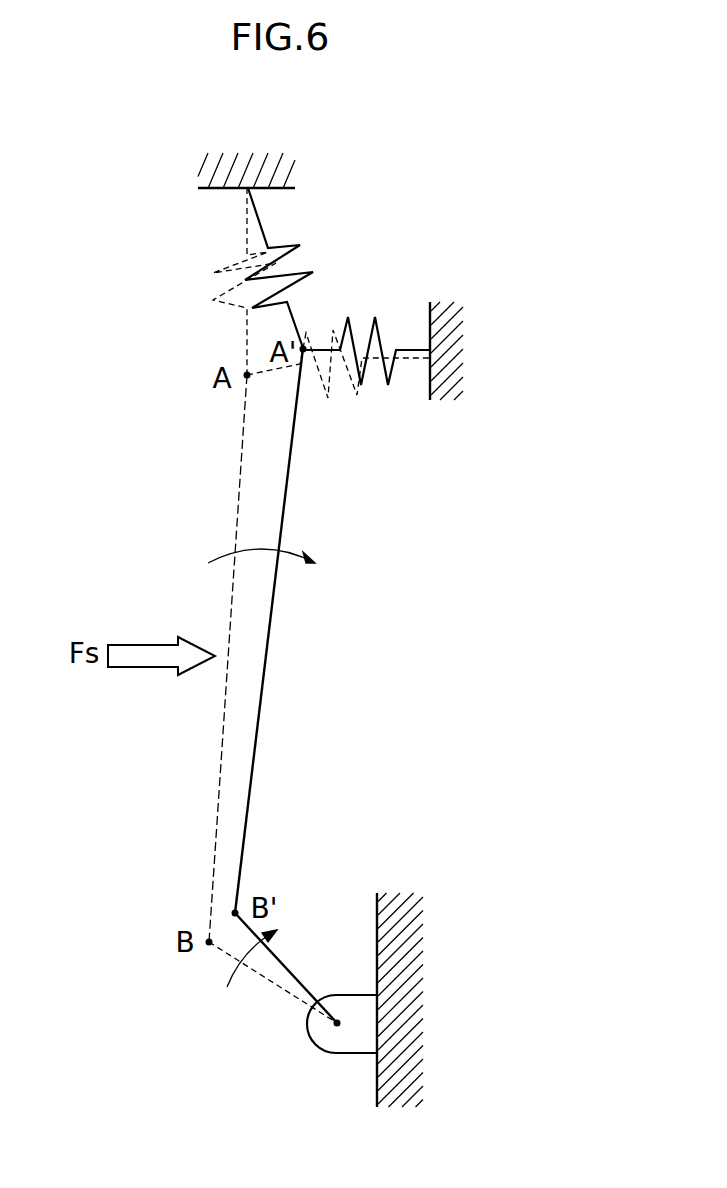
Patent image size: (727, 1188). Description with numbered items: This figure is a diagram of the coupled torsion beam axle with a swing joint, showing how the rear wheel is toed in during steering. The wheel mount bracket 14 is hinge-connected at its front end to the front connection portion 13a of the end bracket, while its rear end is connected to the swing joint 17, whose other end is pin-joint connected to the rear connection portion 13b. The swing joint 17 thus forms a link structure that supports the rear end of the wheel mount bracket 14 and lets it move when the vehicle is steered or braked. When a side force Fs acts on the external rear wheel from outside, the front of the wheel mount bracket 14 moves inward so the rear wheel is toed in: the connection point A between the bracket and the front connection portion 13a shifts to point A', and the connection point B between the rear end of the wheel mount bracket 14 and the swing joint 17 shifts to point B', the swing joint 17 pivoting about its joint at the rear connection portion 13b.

The front connection portion 13a is at (257, 170).
The rear connection portion 13b is at (400, 1013).
The wheel mount bracket 14 is at (267, 667).
The swing joint 17 is at (289, 968).